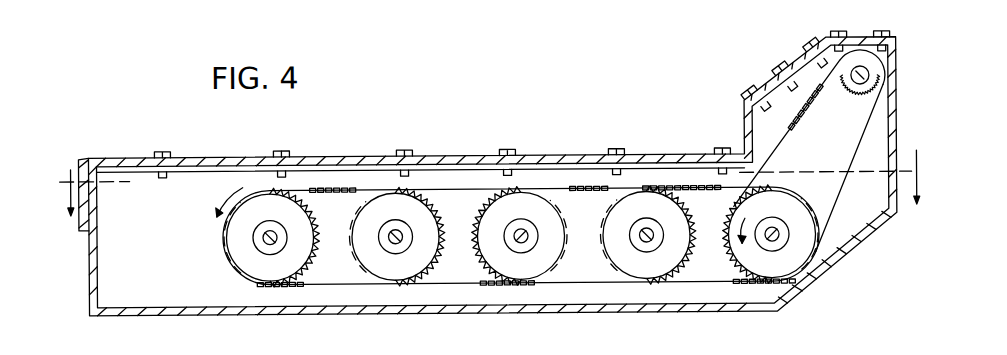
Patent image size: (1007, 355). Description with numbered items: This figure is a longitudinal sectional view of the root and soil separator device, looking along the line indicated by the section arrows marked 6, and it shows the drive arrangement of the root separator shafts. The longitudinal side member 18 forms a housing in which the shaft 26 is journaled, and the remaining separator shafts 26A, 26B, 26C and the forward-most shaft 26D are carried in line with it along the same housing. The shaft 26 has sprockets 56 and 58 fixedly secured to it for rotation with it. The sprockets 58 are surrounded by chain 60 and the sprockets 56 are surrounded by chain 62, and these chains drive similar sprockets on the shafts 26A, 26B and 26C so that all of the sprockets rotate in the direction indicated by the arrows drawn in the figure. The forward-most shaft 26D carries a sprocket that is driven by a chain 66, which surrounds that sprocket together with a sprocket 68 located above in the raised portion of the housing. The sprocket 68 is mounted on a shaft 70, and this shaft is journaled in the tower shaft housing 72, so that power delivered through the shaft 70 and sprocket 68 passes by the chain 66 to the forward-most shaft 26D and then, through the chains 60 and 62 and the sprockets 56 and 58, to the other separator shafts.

The longitudinal side member 18 is at (440, 156).
The shaft 26 is at (658, 211).
The shaft 26A is at (542, 210).
The shaft 26B is at (392, 236).
The shaft 26C is at (266, 236).
The forward-most shaft 26D is at (791, 207).
The sprocket 56 is at (234, 236).
The sprocket 58 is at (423, 226).
The chain 60 is at (446, 282).
The chain 62 is at (346, 282).
The chain 66 is at (787, 140).
The sprocket 68 is at (861, 67).
The shaft 70 is at (858, 99).
The tower shaft housing 72 is at (889, 130).
The section line 6- 6 is at (490, 201).